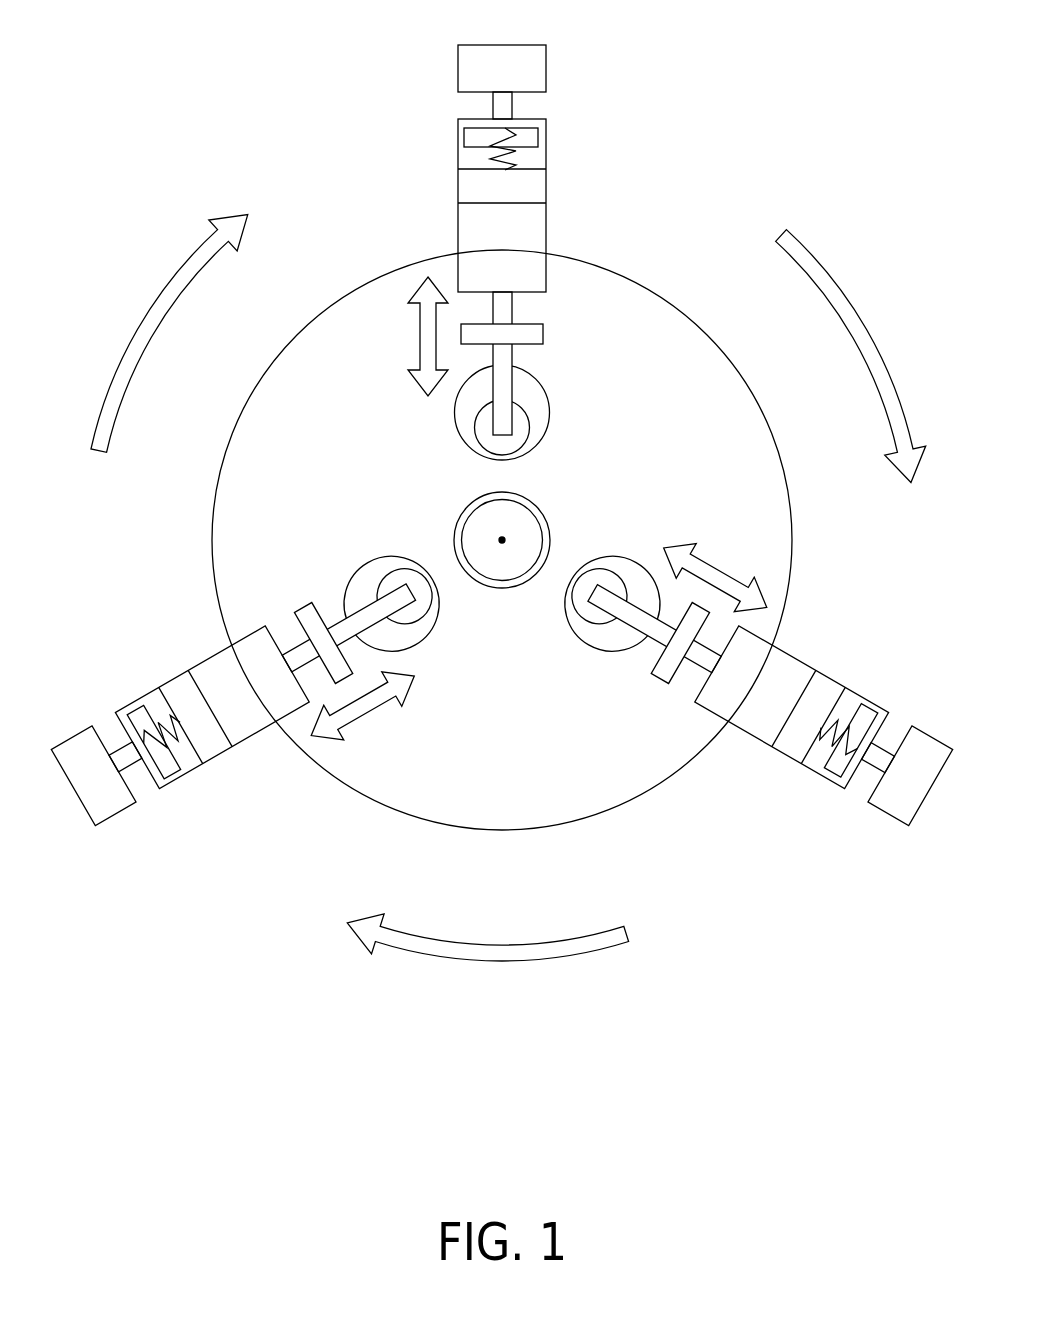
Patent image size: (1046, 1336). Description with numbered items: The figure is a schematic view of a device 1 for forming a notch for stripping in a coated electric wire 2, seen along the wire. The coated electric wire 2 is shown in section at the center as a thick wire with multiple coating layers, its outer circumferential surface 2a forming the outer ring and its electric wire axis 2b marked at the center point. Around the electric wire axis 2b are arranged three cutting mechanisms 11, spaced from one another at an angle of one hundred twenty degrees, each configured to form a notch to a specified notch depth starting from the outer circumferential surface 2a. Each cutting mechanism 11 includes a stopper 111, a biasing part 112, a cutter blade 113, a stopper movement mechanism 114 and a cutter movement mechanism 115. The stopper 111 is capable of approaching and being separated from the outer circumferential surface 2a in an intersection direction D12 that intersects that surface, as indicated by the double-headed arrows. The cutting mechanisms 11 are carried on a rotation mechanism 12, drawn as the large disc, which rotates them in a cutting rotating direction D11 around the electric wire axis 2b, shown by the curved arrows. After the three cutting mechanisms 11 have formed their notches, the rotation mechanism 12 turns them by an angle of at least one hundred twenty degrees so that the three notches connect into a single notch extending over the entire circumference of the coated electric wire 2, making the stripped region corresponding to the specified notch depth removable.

The device for forming a notch for stripping 1 is at (286, 36).
The coated electric wire 2 is at (506, 556).
The outer circumferential surface 2a is at (466, 512).
The electric wire axis 2b is at (502, 543).
The cutting mechanism 11 is at (502, 454).
The stopper 111 is at (472, 432).
The biasing part 112 is at (457, 141).
The cutter blade 113 is at (550, 406).
The stopper movement mechanism 114 is at (546, 68).
The cutter movement mechanism 115 is at (457, 233).
The rotation mechanism 12 is at (651, 290).
The cutting rotating direction D11 is at (142, 331).
The intersection direction D12 is at (420, 336).